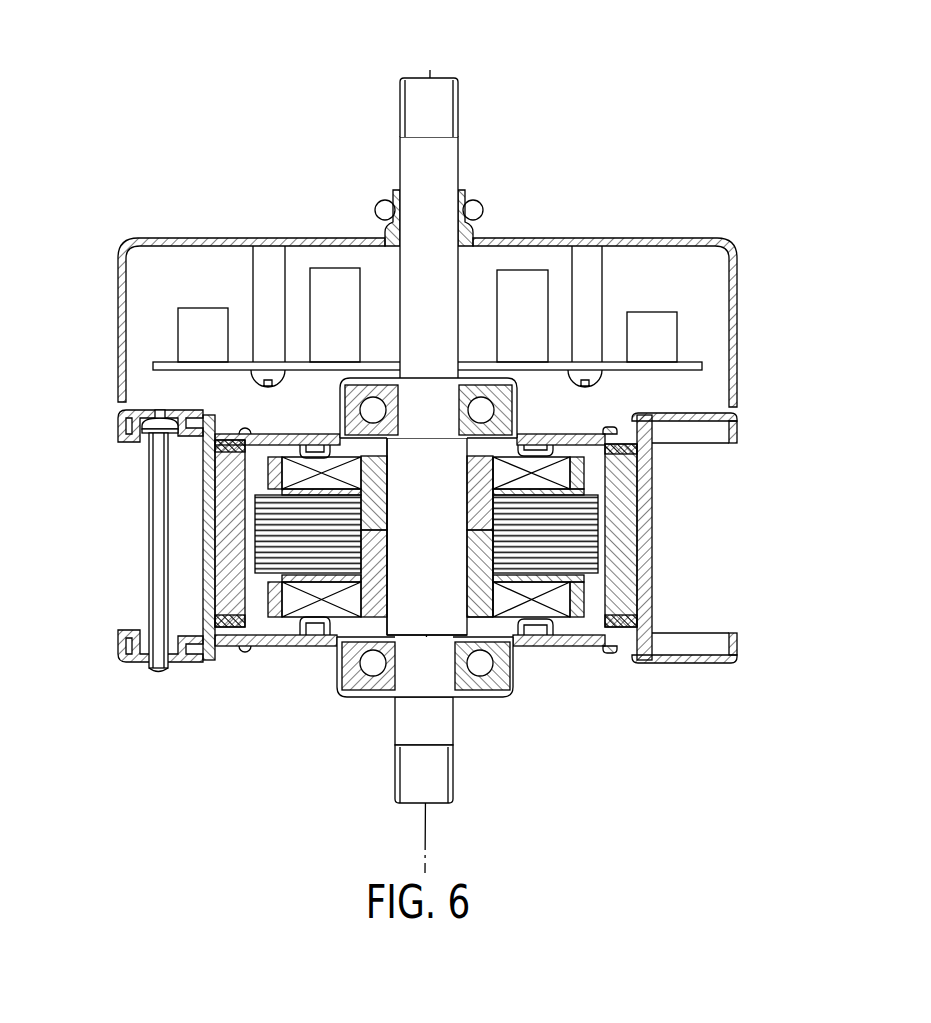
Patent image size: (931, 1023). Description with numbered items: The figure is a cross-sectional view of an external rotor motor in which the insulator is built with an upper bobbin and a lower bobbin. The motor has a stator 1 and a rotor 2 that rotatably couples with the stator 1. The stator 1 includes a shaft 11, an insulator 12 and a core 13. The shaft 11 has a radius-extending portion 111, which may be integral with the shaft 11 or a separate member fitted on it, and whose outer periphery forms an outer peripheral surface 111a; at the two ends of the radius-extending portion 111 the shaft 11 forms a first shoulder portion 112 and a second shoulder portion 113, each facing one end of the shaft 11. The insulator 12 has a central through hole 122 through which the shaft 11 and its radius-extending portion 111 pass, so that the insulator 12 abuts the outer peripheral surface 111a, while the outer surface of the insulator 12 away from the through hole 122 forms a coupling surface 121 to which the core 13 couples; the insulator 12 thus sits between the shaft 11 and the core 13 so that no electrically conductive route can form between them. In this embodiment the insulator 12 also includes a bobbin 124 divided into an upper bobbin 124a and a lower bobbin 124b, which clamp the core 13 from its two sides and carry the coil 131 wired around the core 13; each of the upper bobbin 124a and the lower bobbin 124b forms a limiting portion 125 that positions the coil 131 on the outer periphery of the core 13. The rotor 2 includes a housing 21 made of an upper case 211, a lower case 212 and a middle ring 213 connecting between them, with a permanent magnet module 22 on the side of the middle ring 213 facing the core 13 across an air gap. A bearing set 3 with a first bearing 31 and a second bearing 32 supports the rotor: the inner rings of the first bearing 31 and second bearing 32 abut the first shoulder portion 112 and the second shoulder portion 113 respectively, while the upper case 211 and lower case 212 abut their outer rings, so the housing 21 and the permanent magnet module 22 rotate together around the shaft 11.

The stator 1 is at (493, 419).
The shaft 11 is at (386, 439).
The radius-extending portion 111 is at (383, 447).
The outer peripheral surface 111a is at (495, 518).
The first shoulder portion 112 is at (408, 465).
The second shoulder portion 113 is at (392, 633).
The insulator 12 is at (544, 422).
The coupling surface 121 is at (555, 617).
The through hole 122 is at (467, 618).
The limiting portion 125 is at (557, 458).
The core 13 is at (493, 414).
The coil 131 is at (557, 478).
The rotor 2 is at (478, 539).
The housing 21 is at (735, 538).
The upper case 211 is at (733, 430).
The lower case 212 is at (731, 640).
The middle ring 213 is at (652, 478).
The permanent magnet module 22 is at (652, 598).
The bearing set 3 is at (381, 582).
The first bearing 31 is at (352, 432).
The second bearing 32 is at (353, 683).
The bobbin 124 is at (331, 533).
The upper bobbin 124a is at (248, 472).
The lower bobbin 124b is at (262, 595).